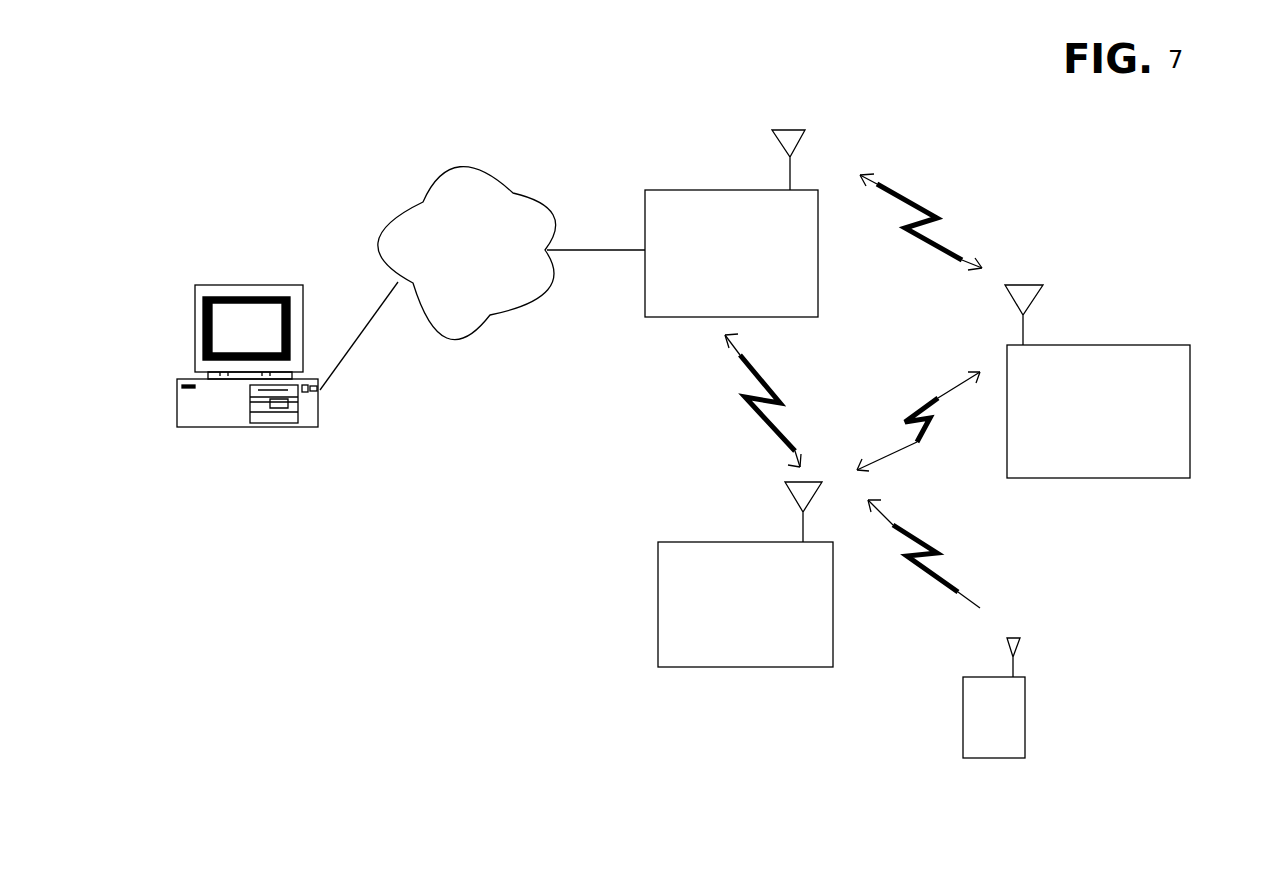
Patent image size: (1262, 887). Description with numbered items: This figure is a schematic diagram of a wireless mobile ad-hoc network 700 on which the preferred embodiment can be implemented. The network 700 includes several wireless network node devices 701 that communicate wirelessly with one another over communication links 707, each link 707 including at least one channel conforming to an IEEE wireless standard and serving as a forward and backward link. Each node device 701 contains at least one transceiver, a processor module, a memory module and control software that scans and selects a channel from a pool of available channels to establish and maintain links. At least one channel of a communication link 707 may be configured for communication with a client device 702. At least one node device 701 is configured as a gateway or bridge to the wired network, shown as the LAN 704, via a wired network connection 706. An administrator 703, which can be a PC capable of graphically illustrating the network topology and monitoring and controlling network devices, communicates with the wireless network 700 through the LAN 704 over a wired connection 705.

The wireless mobile ad-hoc network 700 is at (863, 120).
The wireless network node device 701 is at (688, 223).
The client device 702 is at (1025, 717).
The administrator 703 is at (248, 285).
The wired network (LAN) 704 is at (395, 240).
The wired connection 705 is at (360, 337).
The wired network connection 706 is at (617, 250).
The communication link 707 is at (928, 212).